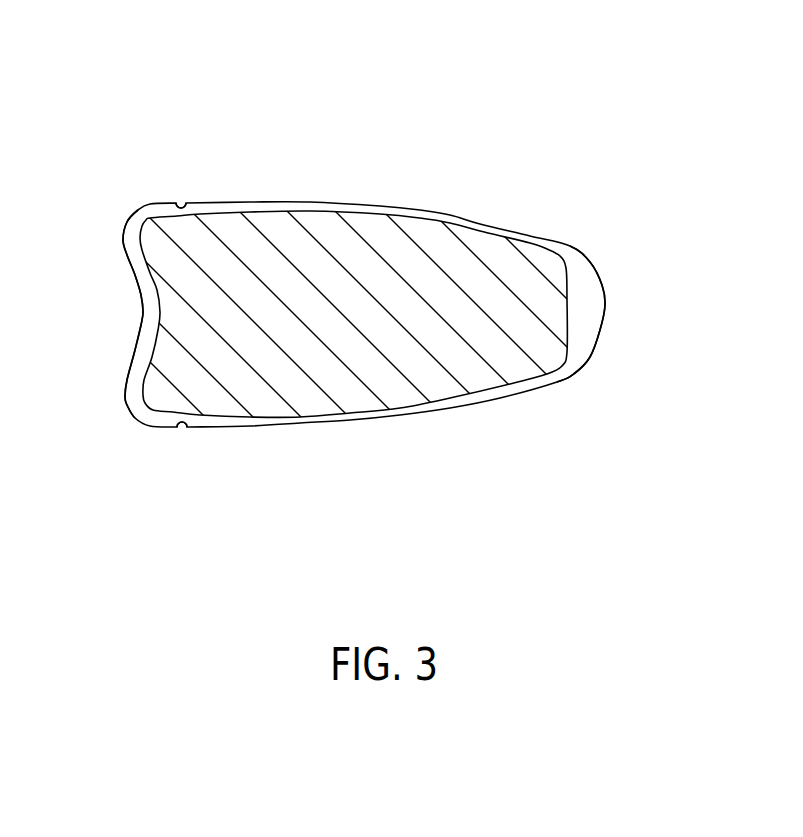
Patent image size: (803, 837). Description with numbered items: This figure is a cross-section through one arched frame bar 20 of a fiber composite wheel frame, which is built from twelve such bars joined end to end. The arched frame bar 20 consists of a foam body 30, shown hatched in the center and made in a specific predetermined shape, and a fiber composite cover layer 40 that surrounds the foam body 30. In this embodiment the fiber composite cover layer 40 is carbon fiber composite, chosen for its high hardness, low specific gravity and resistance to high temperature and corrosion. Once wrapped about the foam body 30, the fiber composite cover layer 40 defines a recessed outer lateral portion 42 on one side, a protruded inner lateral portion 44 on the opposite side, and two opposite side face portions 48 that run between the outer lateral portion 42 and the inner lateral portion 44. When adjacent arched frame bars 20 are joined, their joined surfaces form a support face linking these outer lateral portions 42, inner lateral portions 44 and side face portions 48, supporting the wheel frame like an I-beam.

The arched frame bar 20 is at (441, 93).
The foam body 30 is at (437, 287).
The fiber composite cover layer 40 is at (383, 190).
The recessed outer lateral portion 42 is at (140, 312).
The protruded inner lateral portion 44 is at (603, 305).
The side face portions 48 is at (310, 202).